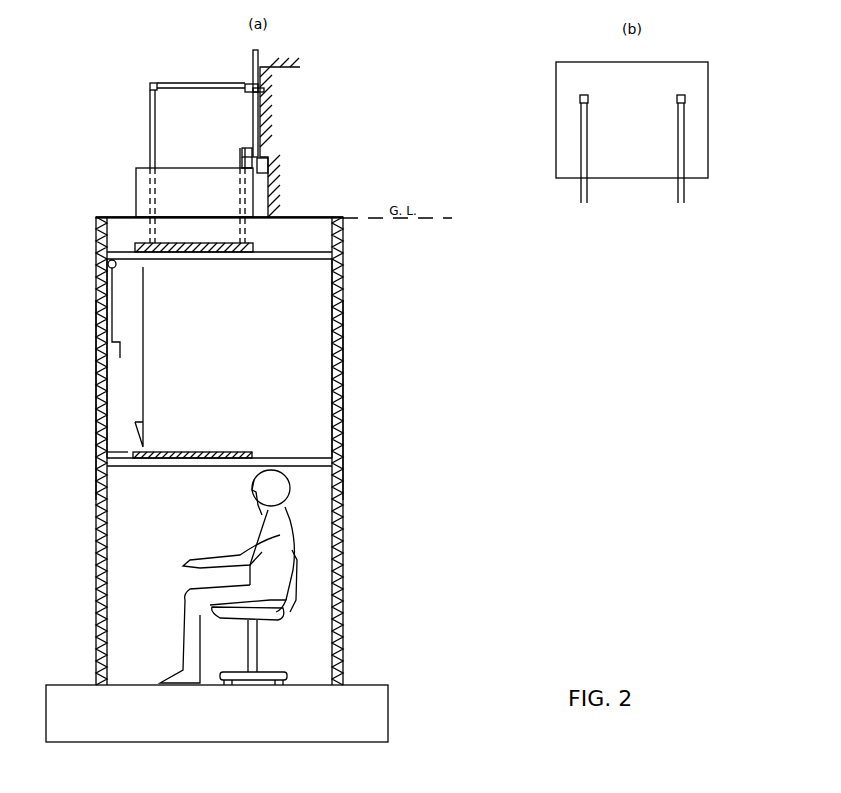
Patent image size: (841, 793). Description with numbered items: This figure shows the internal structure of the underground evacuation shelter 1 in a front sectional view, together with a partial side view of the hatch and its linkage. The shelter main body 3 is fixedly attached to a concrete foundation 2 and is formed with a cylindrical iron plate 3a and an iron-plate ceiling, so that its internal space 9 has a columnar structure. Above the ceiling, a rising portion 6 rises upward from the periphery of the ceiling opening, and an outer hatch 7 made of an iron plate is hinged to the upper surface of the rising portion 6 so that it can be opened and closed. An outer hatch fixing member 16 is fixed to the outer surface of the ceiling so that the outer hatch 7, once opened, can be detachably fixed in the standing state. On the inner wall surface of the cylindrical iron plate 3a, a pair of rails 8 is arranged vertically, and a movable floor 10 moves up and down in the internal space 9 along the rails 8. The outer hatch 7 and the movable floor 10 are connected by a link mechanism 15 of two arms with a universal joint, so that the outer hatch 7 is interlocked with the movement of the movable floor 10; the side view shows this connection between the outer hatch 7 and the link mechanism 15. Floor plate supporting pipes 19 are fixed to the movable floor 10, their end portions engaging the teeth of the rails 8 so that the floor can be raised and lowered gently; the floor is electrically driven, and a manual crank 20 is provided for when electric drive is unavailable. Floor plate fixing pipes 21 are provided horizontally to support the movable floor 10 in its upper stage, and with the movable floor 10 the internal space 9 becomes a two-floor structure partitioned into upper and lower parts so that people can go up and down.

The underground evacuation shelter 1 is at (125, 88).
The concrete foundation 2 is at (378, 712).
The shelter main body 3 is at (318, 198).
The cylindrical iron plate 3a is at (97, 445).
The rising portion 6 is at (140, 175).
The outer hatch 7 is at (252, 67).
The rails 8 is at (100, 355).
The internal space 9 is at (312, 367).
The movable floor 10 is at (178, 250).
The link mechanism 15 is at (170, 82).
The outer hatch fixing member 16 is at (292, 70).
The floor plate supporting pipes 19 is at (312, 462).
The manual crank 20 is at (108, 283).
The floor plate fixing pipes 21 is at (307, 258).